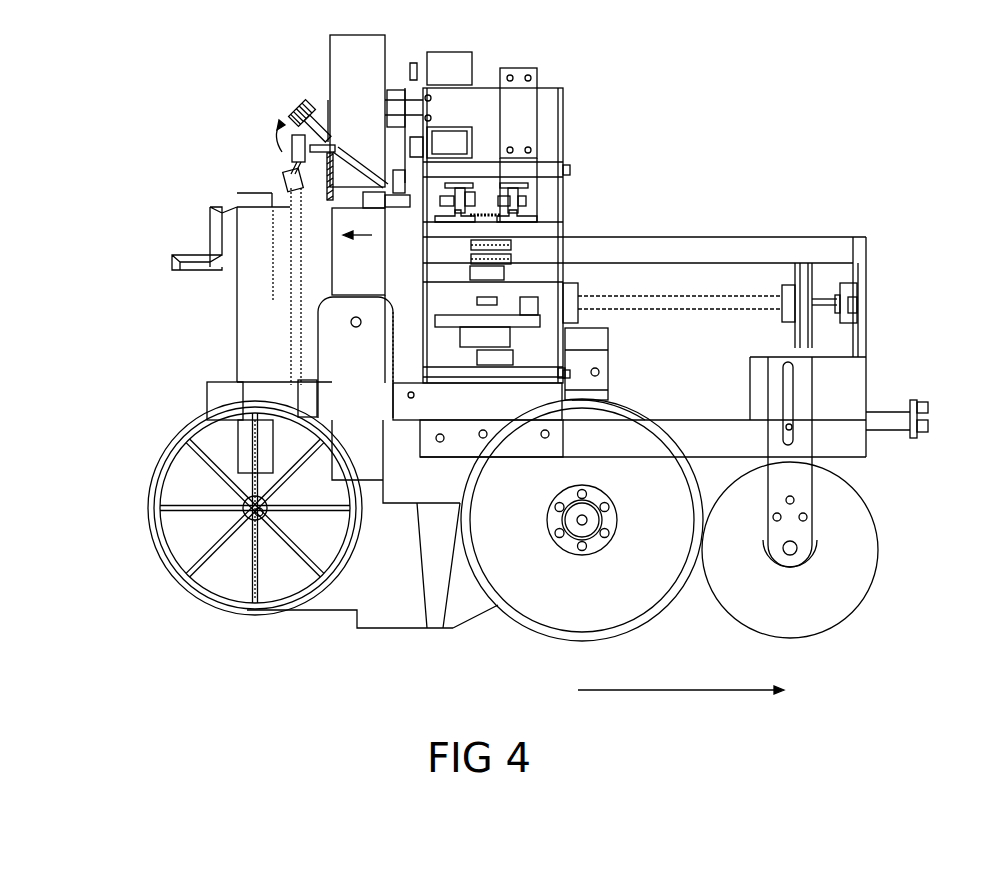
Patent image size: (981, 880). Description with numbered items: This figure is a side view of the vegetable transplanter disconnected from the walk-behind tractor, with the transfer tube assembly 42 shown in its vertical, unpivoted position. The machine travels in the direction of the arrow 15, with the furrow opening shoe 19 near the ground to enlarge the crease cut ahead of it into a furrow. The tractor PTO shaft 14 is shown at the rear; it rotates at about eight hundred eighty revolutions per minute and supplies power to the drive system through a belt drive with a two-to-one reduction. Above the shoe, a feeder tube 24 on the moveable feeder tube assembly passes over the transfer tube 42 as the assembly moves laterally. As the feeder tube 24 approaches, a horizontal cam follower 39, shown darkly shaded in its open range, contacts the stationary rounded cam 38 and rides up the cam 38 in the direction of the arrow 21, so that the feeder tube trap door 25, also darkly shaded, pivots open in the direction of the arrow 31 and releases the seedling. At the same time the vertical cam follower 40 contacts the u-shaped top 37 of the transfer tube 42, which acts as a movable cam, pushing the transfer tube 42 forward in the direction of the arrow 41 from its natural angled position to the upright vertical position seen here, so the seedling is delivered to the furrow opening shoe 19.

The tractor PTO shaft 14 is at (918, 402).
The arrow 15 is at (681, 703).
The furrow opening shoe 19 is at (357, 627).
The arrow 21 is at (277, 141).
The feeder tube 24 is at (347, 108).
The feeder tube trap door 25 is at (345, 190).
The arrow 31 is at (362, 180).
The u-shaped top 37 is at (383, 197).
The stationary rounded cam 38 is at (288, 162).
The horizontal cam follower 39 is at (303, 113).
The vertical cam follower 40 is at (407, 200).
The arrow 41 is at (343, 236).
The transfer tube 42 is at (342, 270).